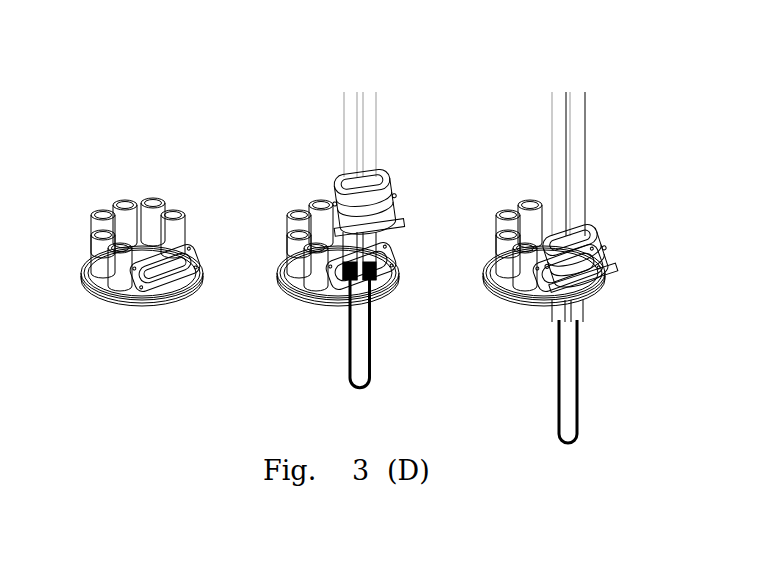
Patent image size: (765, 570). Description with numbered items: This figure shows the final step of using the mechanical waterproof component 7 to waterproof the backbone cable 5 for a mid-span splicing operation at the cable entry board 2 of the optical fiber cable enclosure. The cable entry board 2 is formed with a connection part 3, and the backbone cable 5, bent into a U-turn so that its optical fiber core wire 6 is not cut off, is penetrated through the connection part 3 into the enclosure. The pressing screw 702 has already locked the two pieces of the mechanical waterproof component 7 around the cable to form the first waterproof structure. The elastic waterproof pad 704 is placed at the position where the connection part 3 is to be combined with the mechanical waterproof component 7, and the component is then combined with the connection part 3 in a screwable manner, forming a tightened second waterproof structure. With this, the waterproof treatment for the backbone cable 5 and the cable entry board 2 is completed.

The cable entry board 2 is at (92, 292).
The connection part 3 is at (203, 278).
The backbone cable 5 is at (346, 134).
The optical fiber core wire 6 is at (364, 386).
The mechanical waterproof component 7 is at (389, 186).
The pressing screw 702 is at (600, 242).
The elastic waterproof pad 704 is at (196, 258).